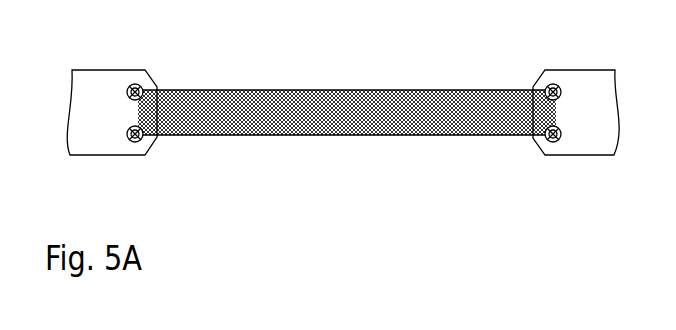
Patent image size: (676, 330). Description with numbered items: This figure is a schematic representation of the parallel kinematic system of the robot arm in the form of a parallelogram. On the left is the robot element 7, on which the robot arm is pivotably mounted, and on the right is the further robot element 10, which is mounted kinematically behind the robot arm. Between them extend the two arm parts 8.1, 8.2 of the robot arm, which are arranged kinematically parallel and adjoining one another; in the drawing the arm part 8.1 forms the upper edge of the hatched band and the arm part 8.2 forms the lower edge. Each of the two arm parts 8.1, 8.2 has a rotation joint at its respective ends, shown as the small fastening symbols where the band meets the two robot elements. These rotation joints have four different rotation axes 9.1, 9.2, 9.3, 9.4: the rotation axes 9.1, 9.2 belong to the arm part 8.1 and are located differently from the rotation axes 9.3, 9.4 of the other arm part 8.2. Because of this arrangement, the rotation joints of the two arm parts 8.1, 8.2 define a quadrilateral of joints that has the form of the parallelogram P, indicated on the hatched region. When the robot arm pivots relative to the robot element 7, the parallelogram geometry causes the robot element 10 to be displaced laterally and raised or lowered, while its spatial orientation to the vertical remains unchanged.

The robot element 7 is at (91, 70).
The further robot element 10 is at (598, 157).
The arm part 8.1 is at (323, 90).
The arm part 8.2 is at (336, 136).
The parallelogram P is at (416, 112).
The rotation axis 9.1 is at (139, 85).
The rotation axis 9.2 is at (557, 85).
The rotation axis 9.3 is at (140, 141).
The rotation axis 9.4 is at (551, 141).